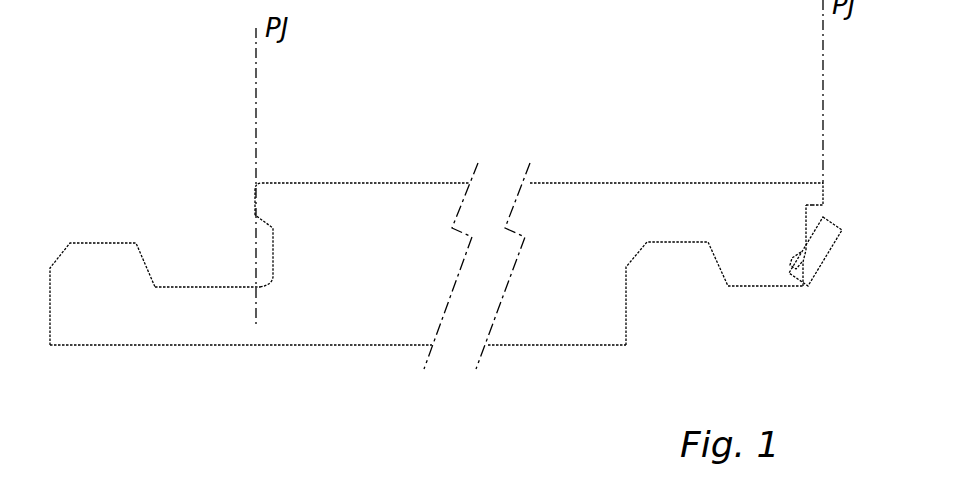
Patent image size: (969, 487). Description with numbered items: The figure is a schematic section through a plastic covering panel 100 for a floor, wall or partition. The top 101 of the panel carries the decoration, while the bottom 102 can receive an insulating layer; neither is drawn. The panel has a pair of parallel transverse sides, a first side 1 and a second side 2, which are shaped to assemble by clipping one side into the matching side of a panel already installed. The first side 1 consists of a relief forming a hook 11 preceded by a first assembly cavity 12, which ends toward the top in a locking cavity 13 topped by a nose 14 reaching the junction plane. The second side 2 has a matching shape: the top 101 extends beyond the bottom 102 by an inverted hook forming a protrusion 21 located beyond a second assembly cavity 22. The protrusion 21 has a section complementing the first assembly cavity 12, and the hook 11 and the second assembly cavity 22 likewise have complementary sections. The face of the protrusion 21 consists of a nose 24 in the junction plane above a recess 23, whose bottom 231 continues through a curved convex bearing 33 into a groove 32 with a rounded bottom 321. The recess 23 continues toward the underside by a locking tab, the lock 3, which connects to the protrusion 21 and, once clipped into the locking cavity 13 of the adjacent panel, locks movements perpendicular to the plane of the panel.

The first side 1 is at (160, 122).
The second side 2 is at (844, 87).
The lock 3 is at (825, 258).
The covering panel 100 is at (570, 58).
The top 101 is at (436, 172).
The bottom 102 is at (388, 360).
The hook 11 is at (78, 301).
The first assembly cavity 12 is at (191, 260).
The locking cavity 13 is at (264, 258).
The nose 14 is at (257, 200).
The protrusion 21 is at (750, 263).
The second assembly cavity 22 is at (663, 301).
The recess 23 is at (809, 200).
The bottom of the recess 231 is at (798, 190).
The nose 24 is at (825, 204).
The groove 32 is at (813, 241).
The rounded bottom 321 is at (797, 288).
The curved convex bearing 33 is at (796, 255).